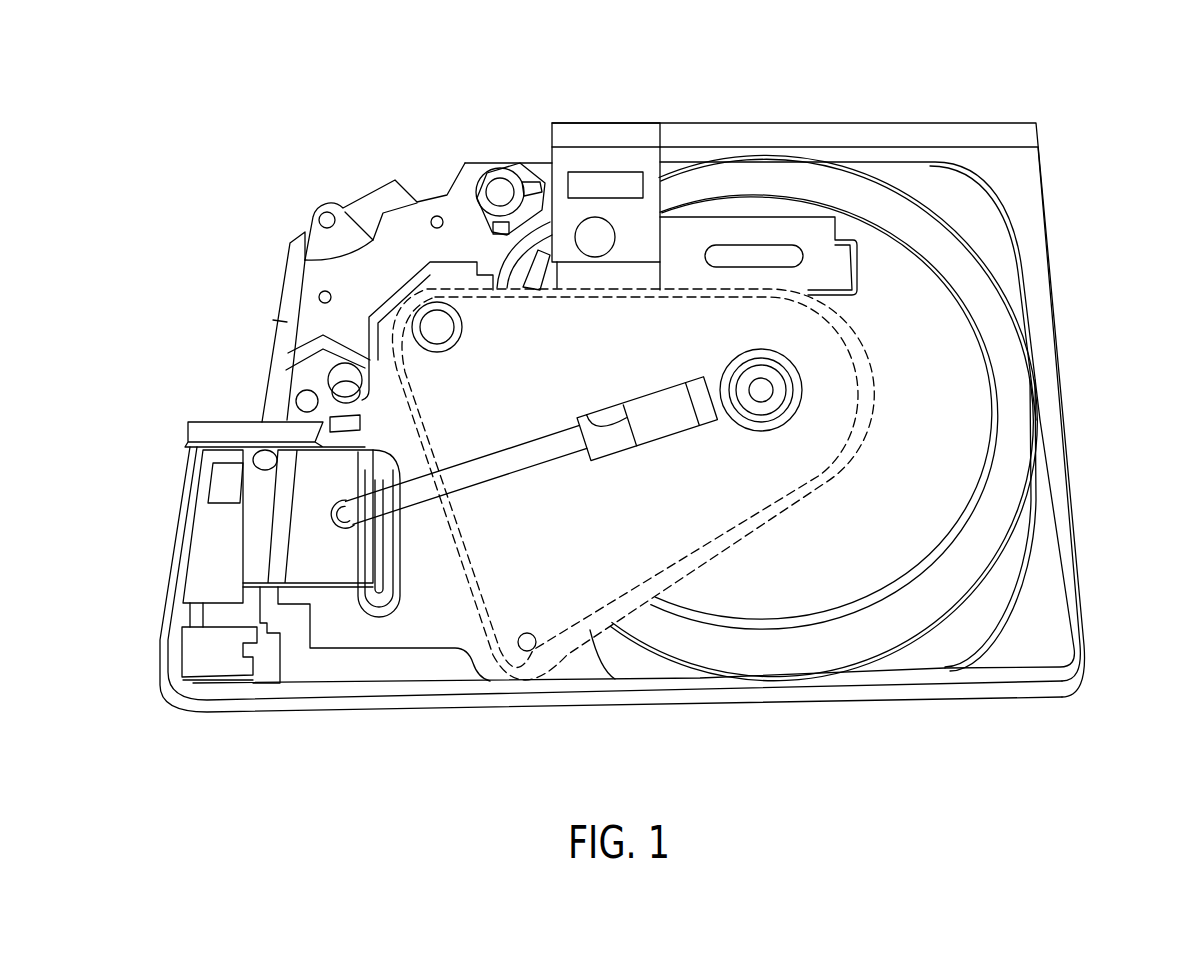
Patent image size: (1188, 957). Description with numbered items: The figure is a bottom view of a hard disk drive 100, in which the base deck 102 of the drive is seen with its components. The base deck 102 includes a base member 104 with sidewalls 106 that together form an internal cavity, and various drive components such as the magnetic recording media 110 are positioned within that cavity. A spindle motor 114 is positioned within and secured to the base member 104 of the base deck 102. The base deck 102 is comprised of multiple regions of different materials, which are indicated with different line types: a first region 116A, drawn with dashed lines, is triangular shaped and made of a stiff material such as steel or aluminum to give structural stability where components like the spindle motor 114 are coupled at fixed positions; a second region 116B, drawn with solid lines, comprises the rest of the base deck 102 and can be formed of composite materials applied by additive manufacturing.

The hard disk drive 100 is at (195, 137).
The base deck 102 is at (357, 733).
The base member 104 is at (952, 480).
The sidewalls 106 is at (1097, 407).
The magnetic recording media 110 is at (1037, 280).
The spindle motor 114 is at (761, 395).
The first region 116A is at (603, 137).
The second region 116B is at (558, 620).